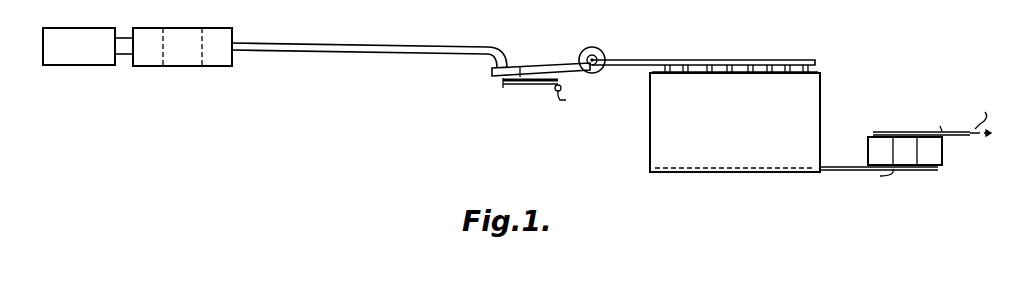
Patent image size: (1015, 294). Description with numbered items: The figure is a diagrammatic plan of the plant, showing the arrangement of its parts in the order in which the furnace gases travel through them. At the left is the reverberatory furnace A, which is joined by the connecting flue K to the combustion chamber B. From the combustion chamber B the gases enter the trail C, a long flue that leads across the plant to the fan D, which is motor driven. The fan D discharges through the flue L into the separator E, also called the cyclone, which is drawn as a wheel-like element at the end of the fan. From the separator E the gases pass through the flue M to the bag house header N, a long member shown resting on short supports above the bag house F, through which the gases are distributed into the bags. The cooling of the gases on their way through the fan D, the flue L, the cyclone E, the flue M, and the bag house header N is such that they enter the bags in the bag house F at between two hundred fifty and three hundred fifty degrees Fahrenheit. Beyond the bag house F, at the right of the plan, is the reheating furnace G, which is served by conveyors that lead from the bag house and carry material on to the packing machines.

The reverberatory furnace A is at (79, 46).
The combustion chamber B is at (182, 47).
The trail C is at (342, 48).
The fan D is at (497, 72).
The separator E is at (581, 52).
The bag house F is at (735, 122).
The reheating furnace G is at (905, 143).
The connecting flue K is at (127, 50).
The flue L is at (548, 67).
The flue M is at (610, 62).
The bag house header N is at (750, 62).